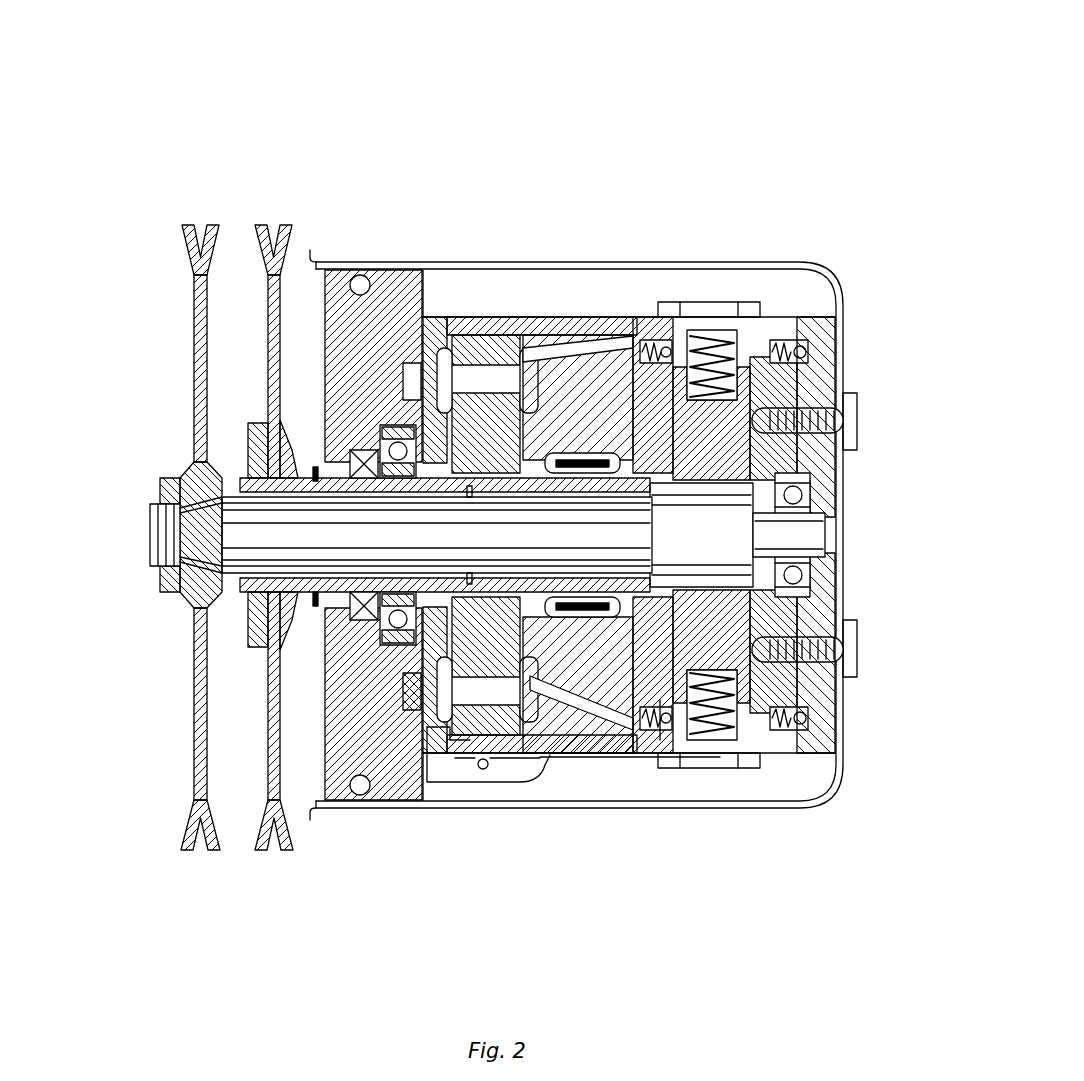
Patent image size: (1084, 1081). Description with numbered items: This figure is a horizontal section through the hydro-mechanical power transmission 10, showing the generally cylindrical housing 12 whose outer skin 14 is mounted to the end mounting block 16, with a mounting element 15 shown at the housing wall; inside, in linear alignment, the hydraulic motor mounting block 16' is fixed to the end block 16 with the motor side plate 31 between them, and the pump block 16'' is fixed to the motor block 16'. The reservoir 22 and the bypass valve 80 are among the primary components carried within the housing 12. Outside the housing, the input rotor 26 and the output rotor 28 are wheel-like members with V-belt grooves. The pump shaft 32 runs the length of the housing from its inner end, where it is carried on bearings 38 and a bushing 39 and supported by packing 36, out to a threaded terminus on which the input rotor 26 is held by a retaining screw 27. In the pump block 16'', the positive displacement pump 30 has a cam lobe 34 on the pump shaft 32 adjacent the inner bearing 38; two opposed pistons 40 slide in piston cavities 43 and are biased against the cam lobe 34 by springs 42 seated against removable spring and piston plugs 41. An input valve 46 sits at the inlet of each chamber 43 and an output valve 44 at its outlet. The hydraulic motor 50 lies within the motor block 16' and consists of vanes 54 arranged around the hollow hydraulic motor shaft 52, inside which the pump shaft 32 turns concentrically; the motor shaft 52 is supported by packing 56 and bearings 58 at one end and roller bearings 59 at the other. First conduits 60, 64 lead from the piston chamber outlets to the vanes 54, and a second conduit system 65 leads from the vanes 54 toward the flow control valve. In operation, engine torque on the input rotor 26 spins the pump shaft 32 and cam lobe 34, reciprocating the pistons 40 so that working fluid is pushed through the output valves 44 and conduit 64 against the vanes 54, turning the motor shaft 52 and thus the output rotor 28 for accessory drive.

The hydro-mechanical power transmission 10 is at (402, 125).
The housing 12 is at (348, 245).
The outer skin 14 is at (480, 262).
The mounting bolt and flange 15 is at (865, 413).
The end mounting block 16 is at (336, 452).
The hydraulic motor mounting block 16' is at (630, 803).
The pump block 16'' is at (695, 776).
The reservoir 22 is at (815, 292).
The input rotor 26 is at (190, 250).
The retaining screw 27 is at (165, 478).
The output rotor 28 is at (257, 248).
The pump 30 is at (758, 480).
The motor side plate 31 is at (437, 300).
The pump shaft 32 is at (235, 530).
The cam lobe 34 is at (740, 522).
The packing 36 is at (293, 462).
The bearings 38 is at (800, 495).
The bushing 39 is at (327, 662).
The pistons 40 is at (720, 620).
The spring and piston plugs 41 is at (722, 300).
The springs 42 is at (743, 720).
The piston cavities 43 is at (686, 345).
The output valve 44 is at (643, 342).
The input valve 46 is at (776, 340).
The hydraulic motor 50 is at (490, 340).
The hydraulic motor shaft 52 is at (236, 600).
The vanes 54 is at (482, 693).
The packing 56 is at (362, 462).
The bearings 58 is at (400, 437).
The roller bearings 59 is at (583, 458).
The first conduit 60 is at (570, 360).
The first conduit 64 is at (593, 710).
The second conduit system 65 is at (412, 700).
The bypass valve 80 is at (508, 765).